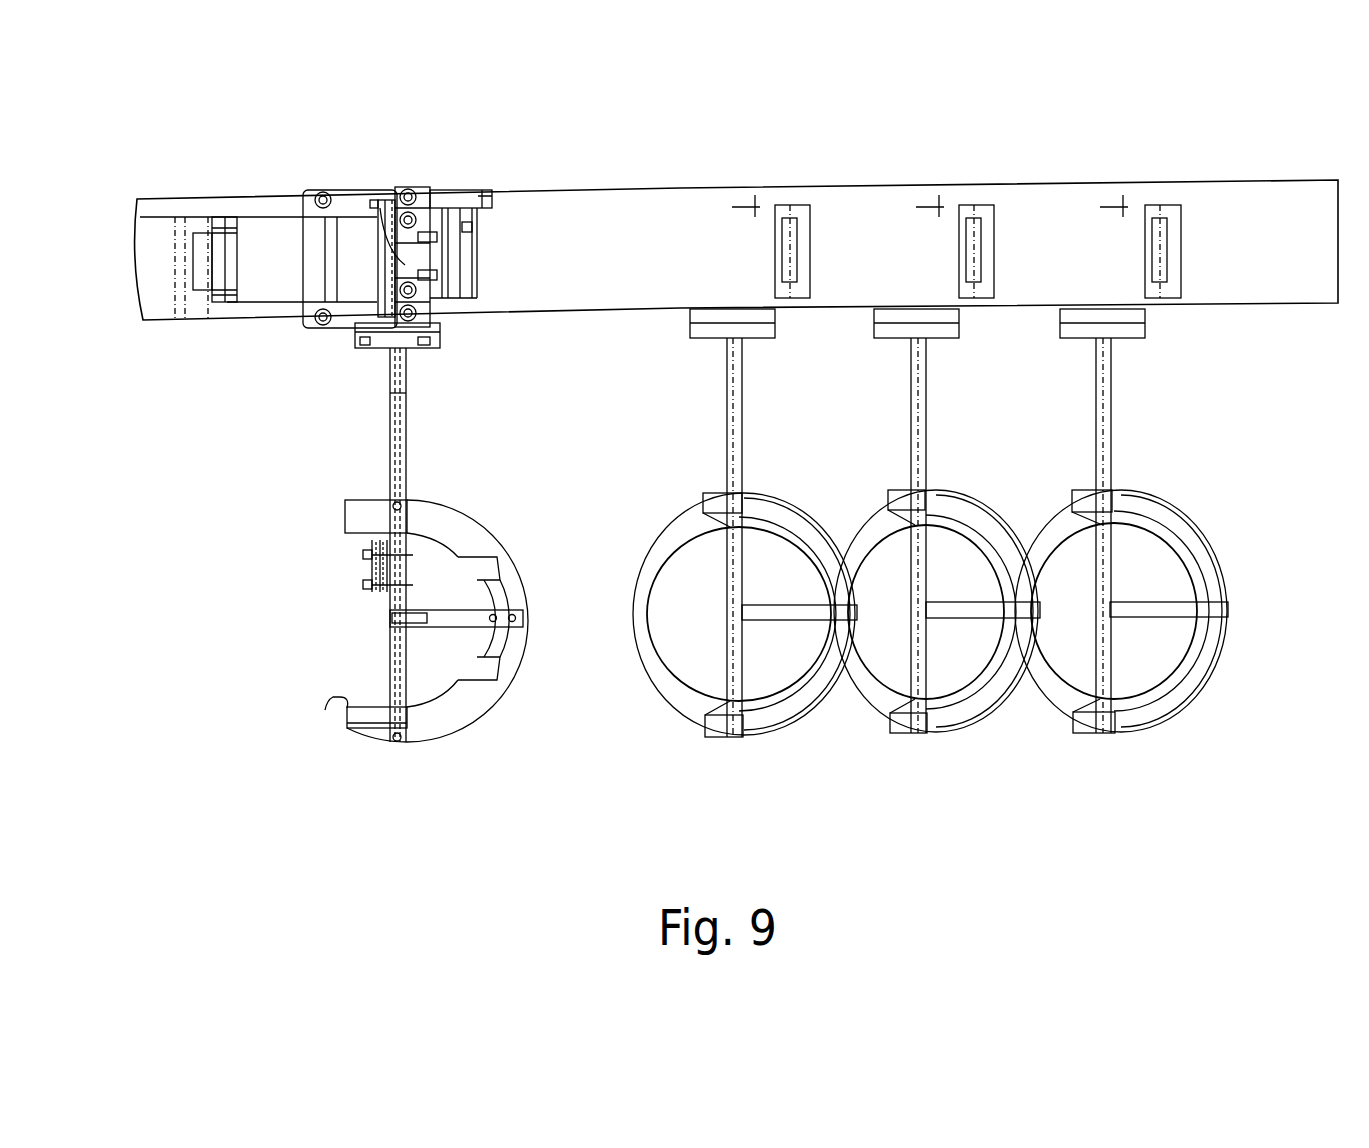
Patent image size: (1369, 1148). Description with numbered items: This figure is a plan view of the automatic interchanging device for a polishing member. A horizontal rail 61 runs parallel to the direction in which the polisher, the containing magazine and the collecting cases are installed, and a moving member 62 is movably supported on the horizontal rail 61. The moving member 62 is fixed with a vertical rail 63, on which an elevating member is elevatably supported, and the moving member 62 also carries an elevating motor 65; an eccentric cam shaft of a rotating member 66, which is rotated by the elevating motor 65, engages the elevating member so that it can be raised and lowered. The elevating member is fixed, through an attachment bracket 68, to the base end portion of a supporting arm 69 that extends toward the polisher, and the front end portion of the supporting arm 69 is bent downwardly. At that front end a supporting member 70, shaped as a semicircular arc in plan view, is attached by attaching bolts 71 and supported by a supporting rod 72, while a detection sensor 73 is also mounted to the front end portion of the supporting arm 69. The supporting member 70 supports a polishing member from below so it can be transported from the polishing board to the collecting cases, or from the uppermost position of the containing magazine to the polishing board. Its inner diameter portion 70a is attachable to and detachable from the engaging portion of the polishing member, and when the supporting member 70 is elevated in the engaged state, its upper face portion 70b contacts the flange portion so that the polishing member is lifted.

The horizontal rail 61 is at (590, 190).
The moving member 62 is at (342, 200).
The vertical rail 63 is at (453, 230).
The elevating motor 65 is at (267, 228).
The rotating member 66 is at (392, 230).
The attachment bracket 68 is at (437, 322).
The supporting arm 69 is at (400, 423).
The supporting member 70 is at (453, 718).
The inner diameter portion 70a is at (325, 710).
The upper face portion 70b is at (417, 712).
The attaching bolts 71 is at (397, 505).
The supporting rod 72 is at (445, 618).
The detection sensor 73 is at (363, 571).